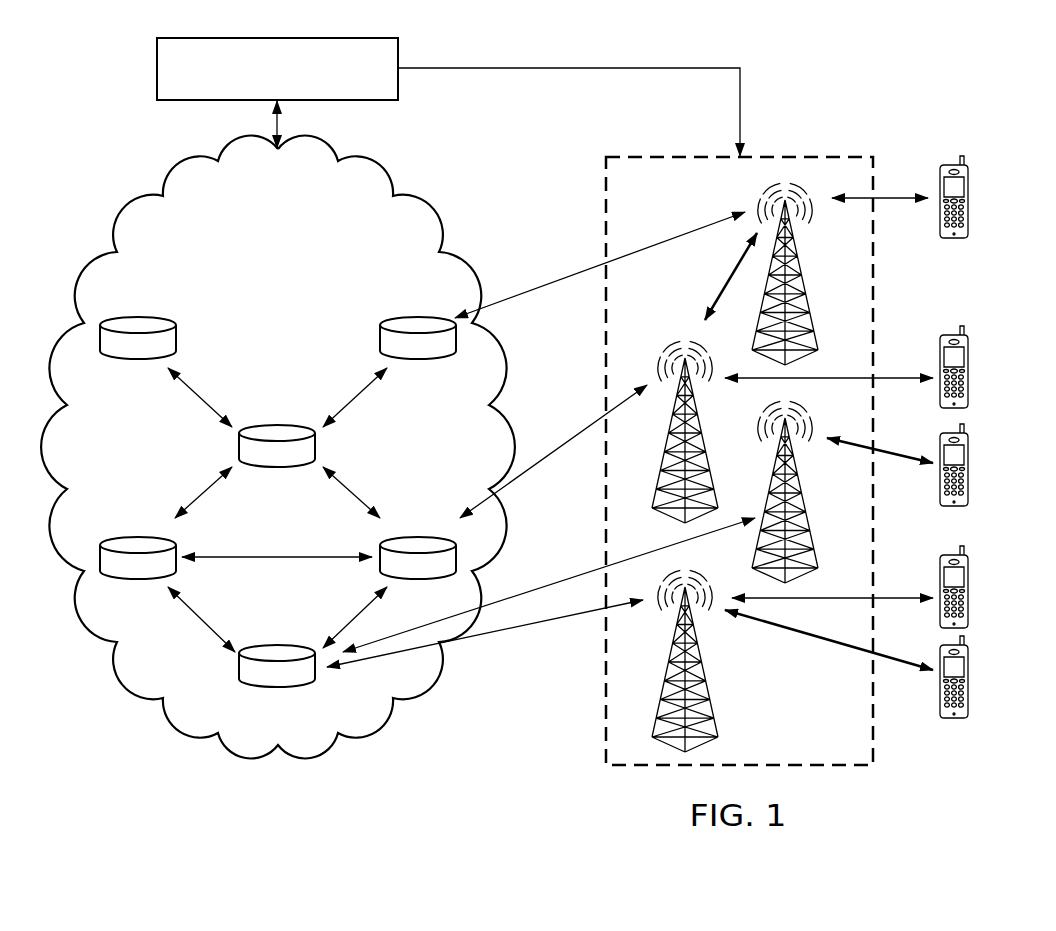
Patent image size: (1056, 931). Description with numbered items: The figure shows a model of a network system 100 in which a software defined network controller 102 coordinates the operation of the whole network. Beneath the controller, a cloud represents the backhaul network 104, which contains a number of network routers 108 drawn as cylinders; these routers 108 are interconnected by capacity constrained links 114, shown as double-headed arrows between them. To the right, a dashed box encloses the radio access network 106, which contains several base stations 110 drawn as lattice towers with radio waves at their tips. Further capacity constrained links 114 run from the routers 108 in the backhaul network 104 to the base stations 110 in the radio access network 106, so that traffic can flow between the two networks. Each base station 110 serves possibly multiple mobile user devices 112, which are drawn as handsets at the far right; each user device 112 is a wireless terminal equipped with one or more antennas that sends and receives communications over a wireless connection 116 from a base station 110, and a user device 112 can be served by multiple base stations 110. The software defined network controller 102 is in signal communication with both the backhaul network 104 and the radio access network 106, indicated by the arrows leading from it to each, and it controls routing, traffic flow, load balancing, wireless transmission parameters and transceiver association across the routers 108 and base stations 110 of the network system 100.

The network system 100 is at (127, 717).
The software defined network controller 102 is at (157, 57).
The backhaul network 104 is at (125, 222).
The radio access network 106 is at (800, 153).
The network router 108 is at (138, 323).
The base station 110 is at (805, 282).
The mobile user device 112 is at (998, 691).
The capacity constrained link 114 is at (208, 402).
The wireless connection 116 is at (893, 195).